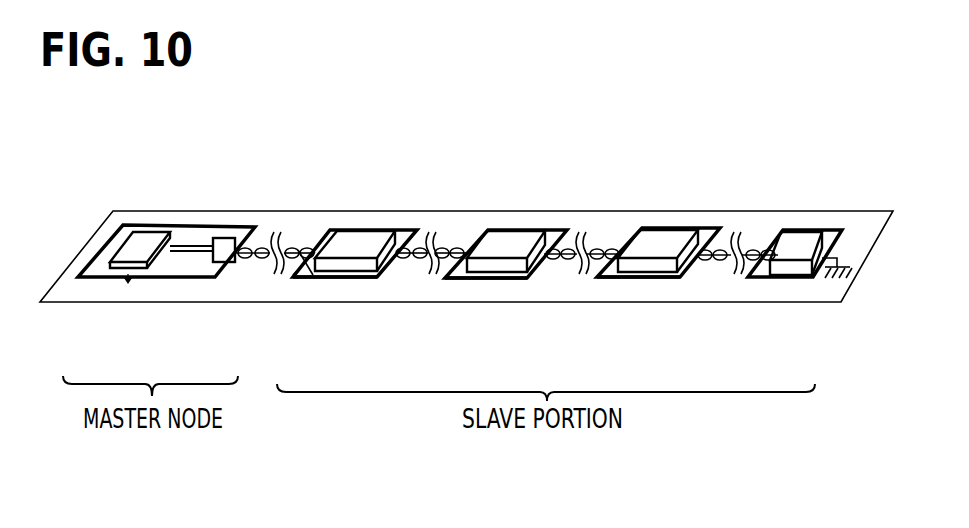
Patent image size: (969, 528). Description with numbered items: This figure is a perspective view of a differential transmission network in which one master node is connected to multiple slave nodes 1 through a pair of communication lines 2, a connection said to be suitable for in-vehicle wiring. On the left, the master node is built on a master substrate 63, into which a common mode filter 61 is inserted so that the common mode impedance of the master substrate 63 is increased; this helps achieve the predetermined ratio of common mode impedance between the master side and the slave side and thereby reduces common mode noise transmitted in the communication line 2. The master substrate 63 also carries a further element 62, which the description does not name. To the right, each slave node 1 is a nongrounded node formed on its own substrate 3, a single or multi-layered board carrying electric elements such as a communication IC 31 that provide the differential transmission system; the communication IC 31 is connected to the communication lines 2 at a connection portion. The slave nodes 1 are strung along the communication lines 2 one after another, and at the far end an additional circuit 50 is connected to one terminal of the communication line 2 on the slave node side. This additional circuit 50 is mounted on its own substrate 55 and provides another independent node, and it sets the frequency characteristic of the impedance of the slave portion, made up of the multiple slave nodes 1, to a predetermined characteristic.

The slave node 1 is at (391, 218).
The communication lines 2 is at (305, 272).
The substrate 3 is at (360, 279).
The communication IC 31 is at (343, 236).
The additional circuit 50 is at (810, 232).
The substrate 55 is at (801, 279).
The common mode filter 61 is at (226, 245).
The master IC chip 62 is at (137, 250).
The master substrate 63 is at (195, 279).